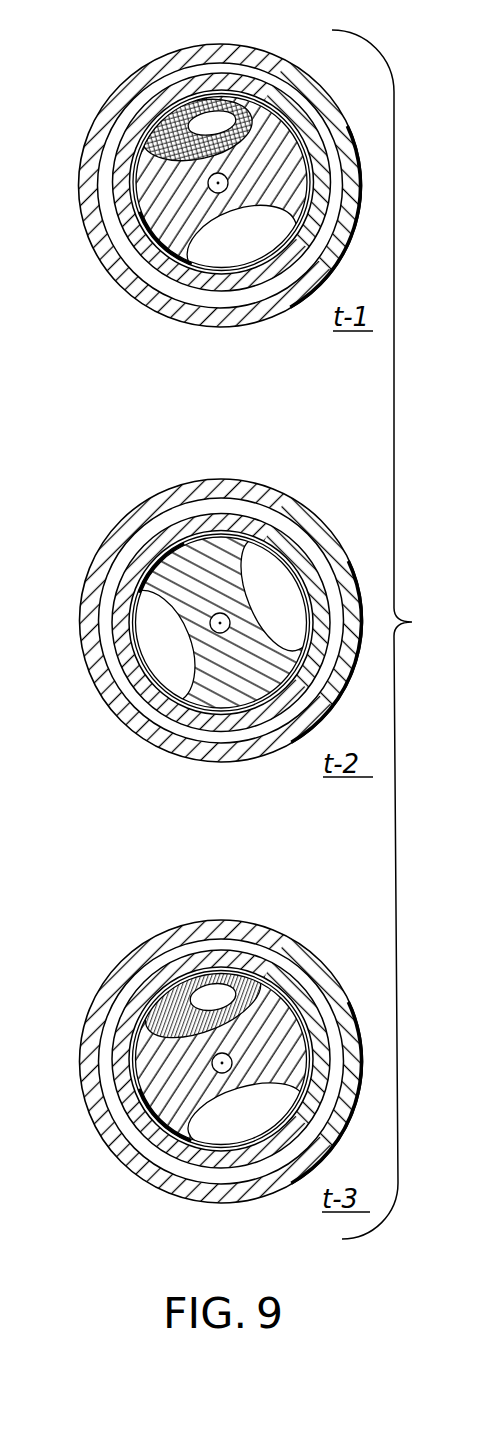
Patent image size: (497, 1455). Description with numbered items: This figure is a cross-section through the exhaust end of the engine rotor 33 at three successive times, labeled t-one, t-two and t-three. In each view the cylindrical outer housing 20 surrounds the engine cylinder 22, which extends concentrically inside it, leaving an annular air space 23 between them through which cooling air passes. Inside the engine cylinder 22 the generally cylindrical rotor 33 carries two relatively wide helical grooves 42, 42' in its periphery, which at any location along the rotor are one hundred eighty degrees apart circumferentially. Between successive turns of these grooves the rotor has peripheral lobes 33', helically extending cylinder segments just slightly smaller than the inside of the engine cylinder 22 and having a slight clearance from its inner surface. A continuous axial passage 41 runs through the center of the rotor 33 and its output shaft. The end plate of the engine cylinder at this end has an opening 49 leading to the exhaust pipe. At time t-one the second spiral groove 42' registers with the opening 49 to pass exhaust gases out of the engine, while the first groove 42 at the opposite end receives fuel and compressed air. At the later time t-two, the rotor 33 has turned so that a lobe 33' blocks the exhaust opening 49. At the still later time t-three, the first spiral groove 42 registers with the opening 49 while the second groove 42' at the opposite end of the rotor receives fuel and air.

The cylindrical outer housing 20 is at (93, 127).
The engine cylinder 22 is at (118, 187).
The annular air space 23 is at (107, 157).
The engine rotor 33 is at (214, 622).
The peripheral lobes 33' is at (210, 616).
The axial passage 41 is at (208, 184).
The helical groove 42 is at (213, 621).
The second helical groove 42' is at (189, 609).
The exhaust opening 49 is at (211, 118).